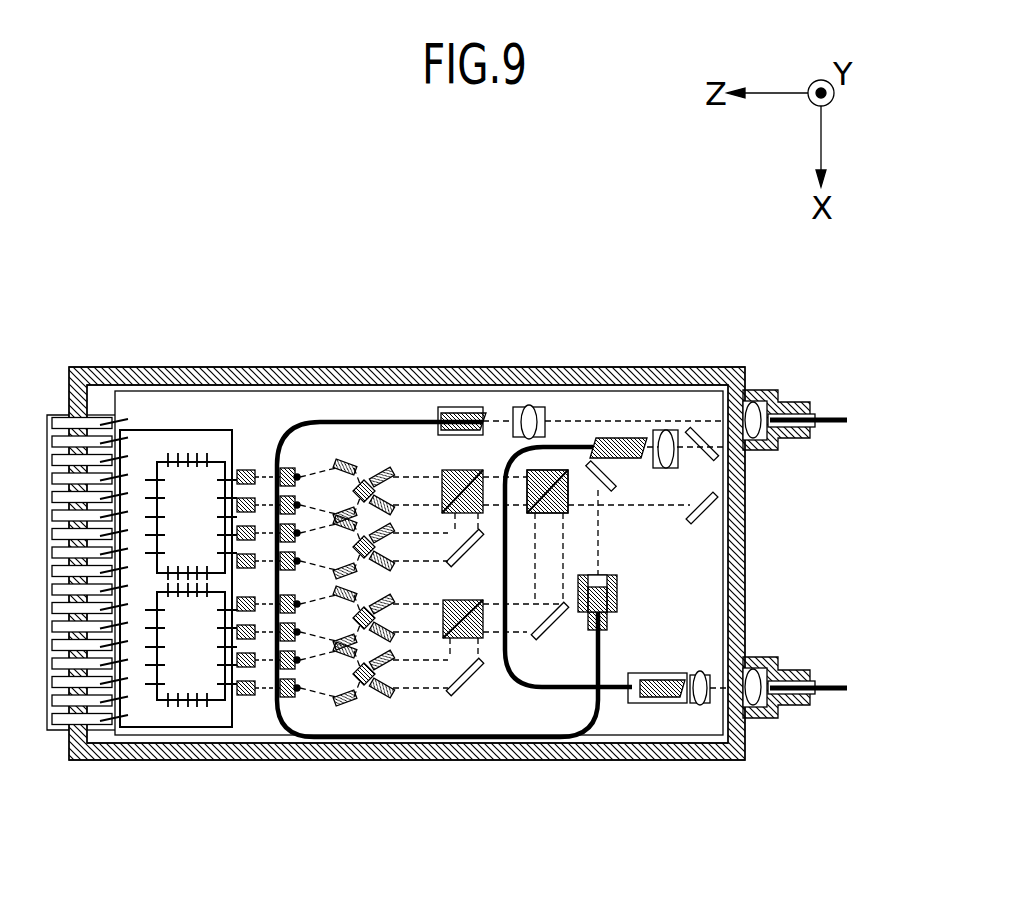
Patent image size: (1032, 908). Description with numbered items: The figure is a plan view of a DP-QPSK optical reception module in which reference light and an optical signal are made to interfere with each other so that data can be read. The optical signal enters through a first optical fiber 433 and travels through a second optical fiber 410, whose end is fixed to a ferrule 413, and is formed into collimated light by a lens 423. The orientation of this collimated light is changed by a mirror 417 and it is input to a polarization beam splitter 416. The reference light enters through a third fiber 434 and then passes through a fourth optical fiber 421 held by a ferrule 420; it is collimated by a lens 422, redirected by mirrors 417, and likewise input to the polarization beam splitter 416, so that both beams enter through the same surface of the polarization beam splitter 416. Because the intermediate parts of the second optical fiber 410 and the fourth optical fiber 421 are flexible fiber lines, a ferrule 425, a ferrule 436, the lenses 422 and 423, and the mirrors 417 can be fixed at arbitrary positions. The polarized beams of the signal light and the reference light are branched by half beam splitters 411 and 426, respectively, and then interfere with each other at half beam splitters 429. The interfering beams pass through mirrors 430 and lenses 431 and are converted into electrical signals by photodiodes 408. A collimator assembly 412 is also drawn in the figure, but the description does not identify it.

The photodiodes 408 is at (252, 462).
The second optical fiber 410 is at (366, 419).
The half beam splitter 411 is at (440, 468).
The collimator 412 is at (470, 406).
The ferrule 413 is at (500, 418).
The polarization beam splitter 416 is at (570, 508).
The mirror 417 is at (717, 508).
The ferrule 420 is at (657, 698).
The fourth optical fiber 421 is at (620, 690).
The lens 422 is at (672, 430).
The lens 423 is at (600, 574).
The ferrule 425 is at (608, 623).
The half beam splitter 426 is at (485, 648).
The half beam splitters 429 is at (362, 684).
The mirrors 430 is at (338, 704).
The lenses 431 is at (290, 700).
The first optical fiber 433 is at (835, 418).
The third fiber 434 is at (832, 690).
The ferrule 436 is at (627, 437).